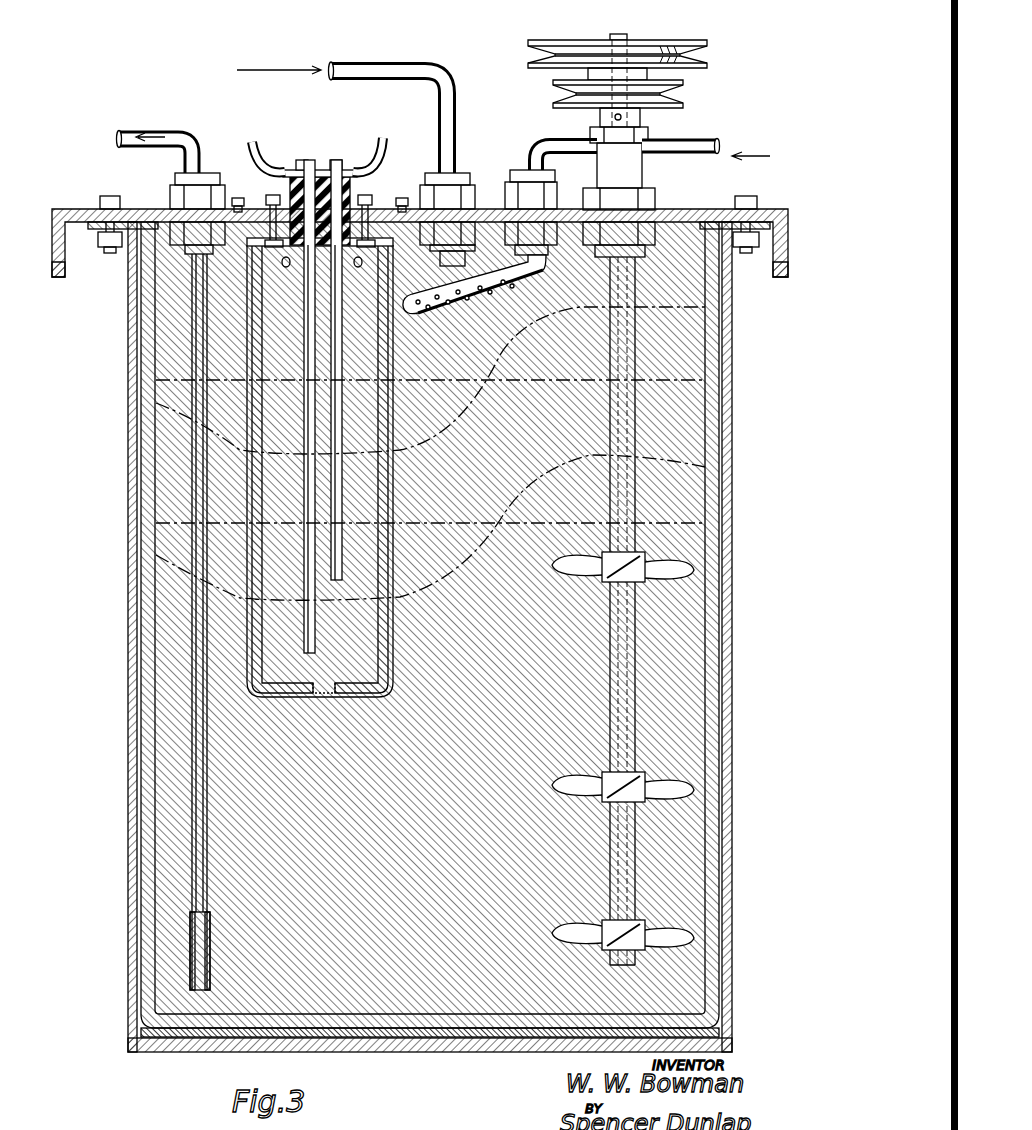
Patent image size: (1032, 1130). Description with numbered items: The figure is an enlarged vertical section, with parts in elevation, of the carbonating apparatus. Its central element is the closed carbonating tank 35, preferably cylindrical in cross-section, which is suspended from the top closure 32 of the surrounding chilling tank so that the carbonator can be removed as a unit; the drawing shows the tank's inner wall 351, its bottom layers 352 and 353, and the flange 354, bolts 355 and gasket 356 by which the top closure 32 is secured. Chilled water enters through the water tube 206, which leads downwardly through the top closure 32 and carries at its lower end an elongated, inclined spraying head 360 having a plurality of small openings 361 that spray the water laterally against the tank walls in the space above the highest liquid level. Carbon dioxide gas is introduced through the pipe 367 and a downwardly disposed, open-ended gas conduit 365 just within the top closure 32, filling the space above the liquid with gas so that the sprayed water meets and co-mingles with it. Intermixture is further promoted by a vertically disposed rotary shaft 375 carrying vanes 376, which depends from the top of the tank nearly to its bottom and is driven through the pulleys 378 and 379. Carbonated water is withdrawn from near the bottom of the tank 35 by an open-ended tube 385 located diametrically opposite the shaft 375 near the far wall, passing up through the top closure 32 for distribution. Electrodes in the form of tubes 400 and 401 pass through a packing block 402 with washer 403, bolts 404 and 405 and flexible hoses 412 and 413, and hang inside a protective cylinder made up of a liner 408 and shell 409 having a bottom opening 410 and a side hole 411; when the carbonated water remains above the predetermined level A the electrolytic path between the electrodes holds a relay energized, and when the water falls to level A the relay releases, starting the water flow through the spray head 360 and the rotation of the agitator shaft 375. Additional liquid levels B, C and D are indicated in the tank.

The top closure 32 is at (72, 212).
The closed tank 35 is at (387, 661).
The inner liner wall 351 is at (141, 495).
The bottom insulation 352 is at (385, 1038).
The outer bottom 353 is at (360, 1052).
The flange 354 is at (100, 238).
The bolt 355 is at (110, 207).
The gasket 356 is at (141, 222).
The spraying head 360 is at (474, 287).
The small openings 361 is at (480, 283).
The gas conduit 365 is at (448, 262).
The pipe 367 is at (357, 71).
The rotary shaft 375 is at (610, 657).
The vanes 376 is at (576, 576).
The pulley 378 is at (672, 47).
The pulley 379 is at (688, 110).
The open-ended tube 385 is at (208, 797).
The water tube 206 is at (540, 150).
The electrode tube 400 is at (308, 363).
The electrode tube 401 is at (337, 363).
The packing block 402 is at (320, 177).
The washer 403 is at (262, 251).
The bolt 404 is at (272, 196).
The bolt 405 is at (368, 210).
The insulating liner 408 is at (334, 489).
The cylinder shell 409 is at (248, 362).
The opening 410 is at (322, 698).
The hole 411 is at (281, 264).
The flexible hose 412 is at (264, 150).
The flexible hose 413 is at (371, 148).
The predetermined level A is at (462, 527).
The liquid level curve B is at (470, 568).
The liquid level curve C is at (448, 448).
The liquid level D is at (454, 383).